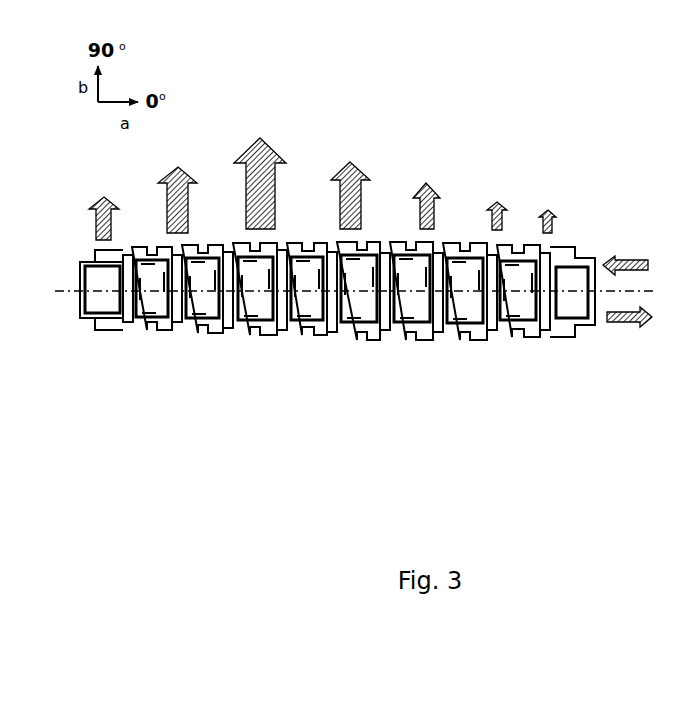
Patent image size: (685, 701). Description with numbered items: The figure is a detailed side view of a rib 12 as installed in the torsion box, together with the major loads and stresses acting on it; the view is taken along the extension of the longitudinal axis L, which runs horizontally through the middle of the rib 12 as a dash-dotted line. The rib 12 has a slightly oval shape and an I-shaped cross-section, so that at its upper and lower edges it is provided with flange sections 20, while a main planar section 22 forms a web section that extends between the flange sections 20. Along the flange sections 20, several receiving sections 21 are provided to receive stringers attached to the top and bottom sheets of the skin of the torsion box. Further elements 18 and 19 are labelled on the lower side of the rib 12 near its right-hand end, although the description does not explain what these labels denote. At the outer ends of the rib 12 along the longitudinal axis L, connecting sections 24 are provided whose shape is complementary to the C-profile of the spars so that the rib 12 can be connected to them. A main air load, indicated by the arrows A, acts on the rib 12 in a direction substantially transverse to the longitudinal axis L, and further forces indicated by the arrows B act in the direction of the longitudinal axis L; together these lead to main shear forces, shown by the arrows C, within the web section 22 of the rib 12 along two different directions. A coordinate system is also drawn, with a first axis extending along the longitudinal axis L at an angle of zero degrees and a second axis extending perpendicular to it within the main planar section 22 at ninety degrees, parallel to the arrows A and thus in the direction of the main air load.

The rib 12 is at (494, 84).
The link body 18 is at (520, 310).
The connecting sleeve 19 is at (547, 330).
The flange sections 20 is at (306, 271).
The receiving sections 21 is at (387, 240).
The main planar section 22 is at (315, 307).
The connecting sections 24 is at (77, 297).
The arrows indicating main air load A is at (501, 187).
The arrows indicating forces in longitudinal direction B is at (627, 293).
The arrows indicating main shear forces C is at (197, 345).
The longitudinal axis L is at (347, 291).